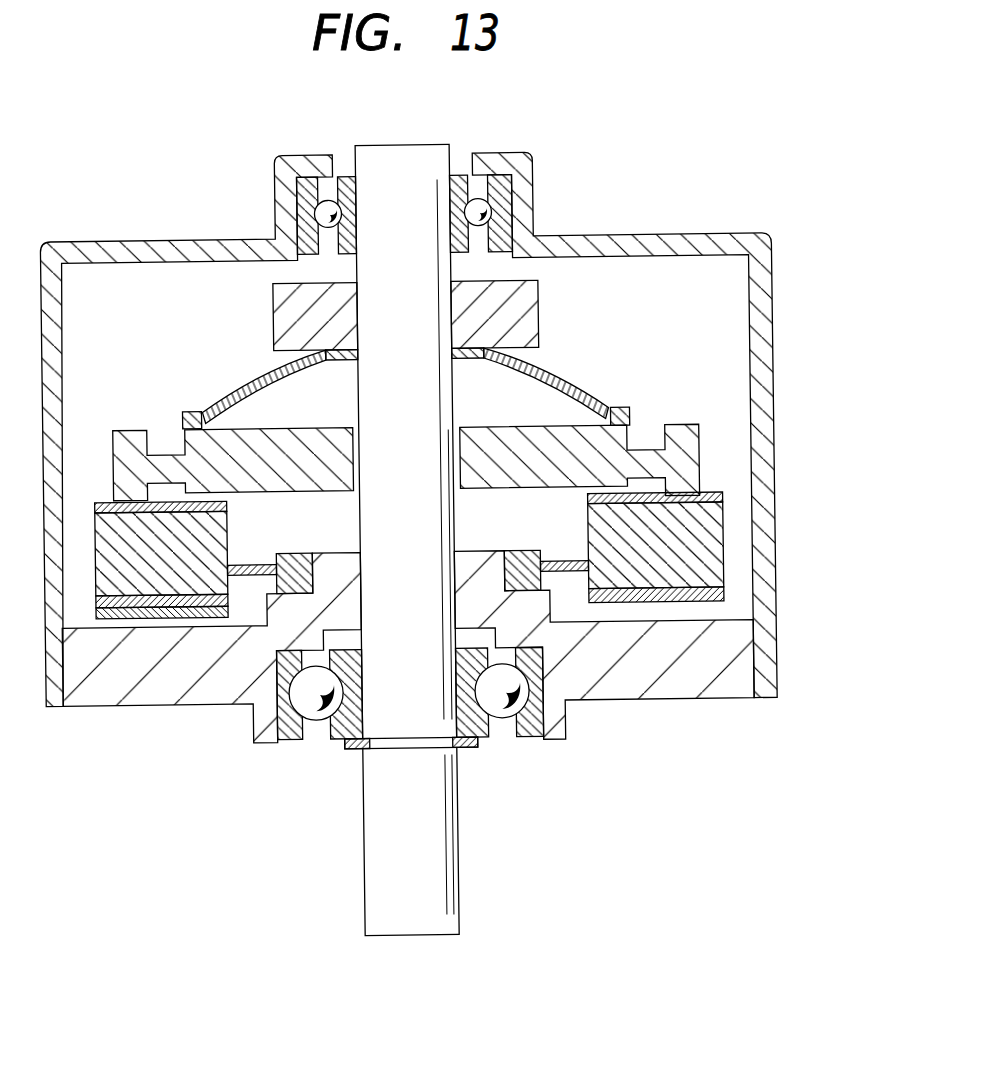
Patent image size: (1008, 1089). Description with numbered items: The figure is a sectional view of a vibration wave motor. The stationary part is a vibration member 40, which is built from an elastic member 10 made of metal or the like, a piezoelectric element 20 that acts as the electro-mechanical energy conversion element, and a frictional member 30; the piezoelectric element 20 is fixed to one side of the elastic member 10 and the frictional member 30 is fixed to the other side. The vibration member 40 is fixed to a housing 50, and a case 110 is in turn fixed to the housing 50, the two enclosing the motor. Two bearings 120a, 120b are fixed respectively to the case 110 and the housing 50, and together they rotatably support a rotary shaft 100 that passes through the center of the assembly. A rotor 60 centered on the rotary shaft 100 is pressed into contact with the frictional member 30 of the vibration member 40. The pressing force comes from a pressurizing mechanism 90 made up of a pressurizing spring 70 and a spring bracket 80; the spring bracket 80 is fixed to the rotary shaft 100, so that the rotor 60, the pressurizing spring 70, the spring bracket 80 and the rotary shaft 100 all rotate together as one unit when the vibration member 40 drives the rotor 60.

The elastic member 10 is at (722, 545).
The piezoelectric element 20 is at (463, 603).
The frictional member 30 is at (722, 492).
The vibration member 40 is at (489, 548).
The housing 50 is at (675, 688).
The rotor 60 is at (700, 440).
The pressurizing spring 70 is at (577, 370).
The spring bracket 80 is at (538, 305).
The pressurizing mechanism 90 is at (530, 355).
The rotary shaft 100 is at (378, 887).
The case 110 is at (715, 240).
The bearing 120a is at (488, 189).
The bearing 120b is at (497, 733).